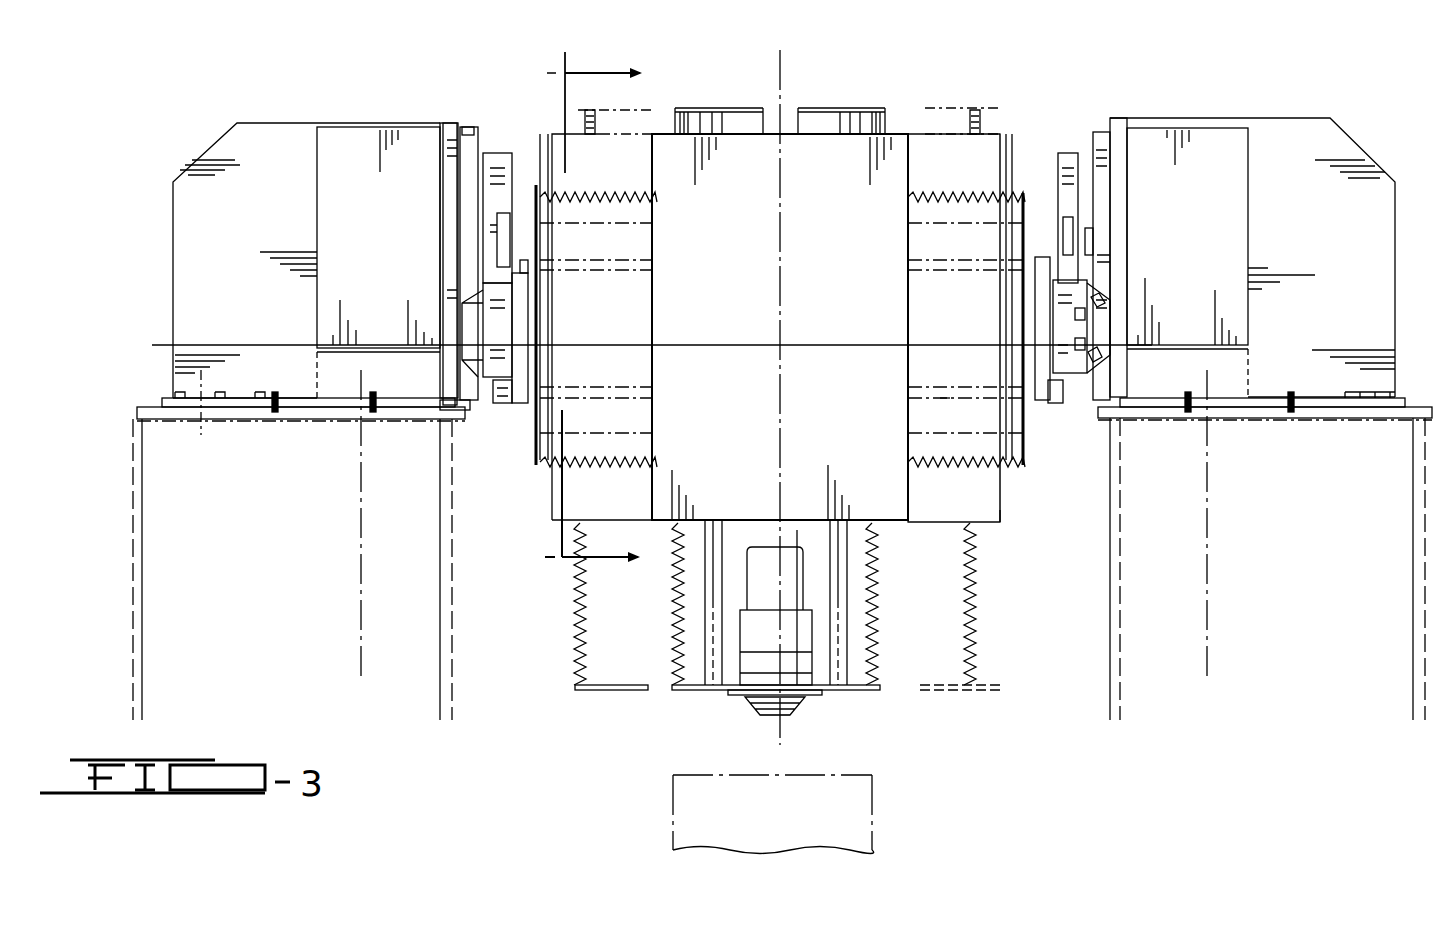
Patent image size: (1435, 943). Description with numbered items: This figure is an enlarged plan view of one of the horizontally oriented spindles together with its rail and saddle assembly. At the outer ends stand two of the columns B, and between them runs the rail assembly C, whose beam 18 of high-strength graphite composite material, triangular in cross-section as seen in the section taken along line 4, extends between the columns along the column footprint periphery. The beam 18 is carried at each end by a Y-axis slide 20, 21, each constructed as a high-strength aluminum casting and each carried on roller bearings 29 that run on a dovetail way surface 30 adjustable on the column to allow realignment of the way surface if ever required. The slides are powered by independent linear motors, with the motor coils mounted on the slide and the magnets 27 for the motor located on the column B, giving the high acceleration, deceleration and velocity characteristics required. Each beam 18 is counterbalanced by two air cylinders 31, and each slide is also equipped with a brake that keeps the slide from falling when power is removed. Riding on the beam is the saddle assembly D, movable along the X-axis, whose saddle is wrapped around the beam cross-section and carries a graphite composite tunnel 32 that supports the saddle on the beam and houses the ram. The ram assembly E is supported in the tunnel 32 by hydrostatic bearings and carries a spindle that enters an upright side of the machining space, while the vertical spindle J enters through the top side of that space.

The column B is at (176, 180).
The section line 4- 4 is at (575, 317).
The magnets 27 is at (1093, 240).
The Y-axis slide 21 is at (478, 405).
The air cylinders 31 is at (510, 405).
The tunnel 32 is at (648, 485).
The beam 18 is at (985, 400).
The Y-axis slide 20 is at (1080, 375).
The dovetail way surface 30 is at (1096, 358).
The roller bearings 29 is at (1100, 362).
The rail assembly C is at (945, 406).
The saddle assembly D is at (1008, 520).
The ram assembly E is at (668, 524).
The spindle J is at (766, 720).